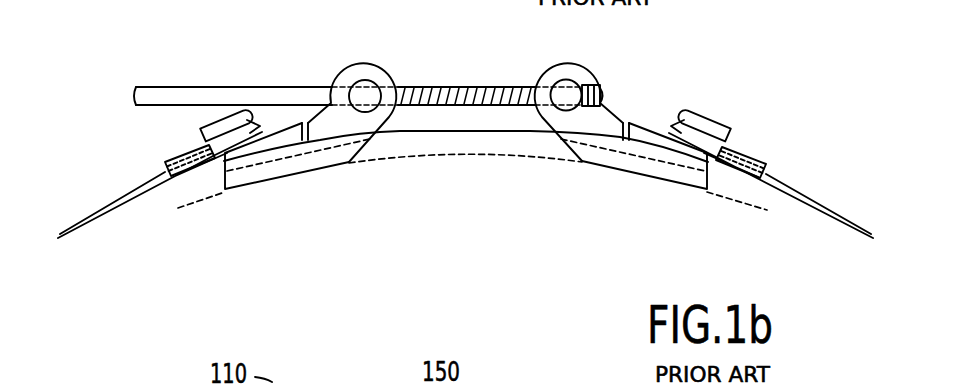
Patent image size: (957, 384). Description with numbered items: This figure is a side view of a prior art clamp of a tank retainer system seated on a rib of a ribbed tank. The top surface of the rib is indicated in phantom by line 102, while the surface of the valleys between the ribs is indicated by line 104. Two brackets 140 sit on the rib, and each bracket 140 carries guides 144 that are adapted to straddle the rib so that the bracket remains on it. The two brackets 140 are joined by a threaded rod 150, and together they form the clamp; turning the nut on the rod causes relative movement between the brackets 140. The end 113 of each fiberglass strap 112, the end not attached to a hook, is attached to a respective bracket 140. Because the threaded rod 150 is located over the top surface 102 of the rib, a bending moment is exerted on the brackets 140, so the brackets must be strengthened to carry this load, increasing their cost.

The top surface of the ribs 102 is at (493, 135).
The surface of the valleys between the ribs 104 is at (393, 163).
The fiberglass strap 112 is at (812, 208).
The end of strap 113 is at (750, 157).
The bracket 140 is at (333, 116).
The guide 144 is at (283, 178).
The threaded rod 150 is at (463, 87).